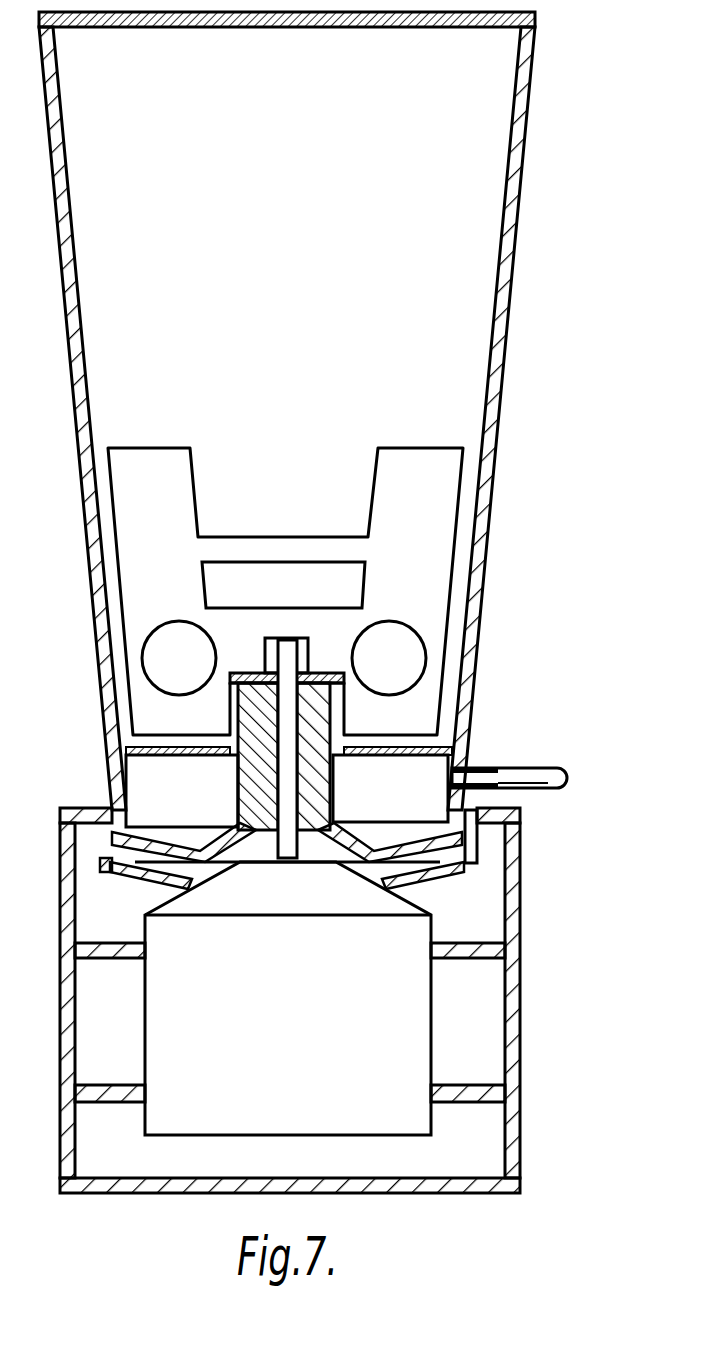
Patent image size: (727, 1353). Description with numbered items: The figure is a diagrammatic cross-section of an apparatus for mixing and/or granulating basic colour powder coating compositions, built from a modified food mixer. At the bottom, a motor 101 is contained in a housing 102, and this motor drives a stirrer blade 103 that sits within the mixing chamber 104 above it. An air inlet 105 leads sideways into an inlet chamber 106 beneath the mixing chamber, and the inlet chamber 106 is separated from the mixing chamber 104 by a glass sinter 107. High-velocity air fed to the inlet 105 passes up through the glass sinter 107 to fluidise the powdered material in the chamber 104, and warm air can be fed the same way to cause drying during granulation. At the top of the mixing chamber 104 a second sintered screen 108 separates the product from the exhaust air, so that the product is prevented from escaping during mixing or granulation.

The motor 101 is at (415, 930).
The housing 102 is at (517, 1000).
The stirrer blade 103 is at (432, 597).
The mixing chamber 104 is at (433, 403).
The air inlet 105 is at (557, 790).
The inlet chamber 106 is at (437, 808).
The glass sinter 107 is at (463, 758).
The second sintered screen 108 is at (488, 28).